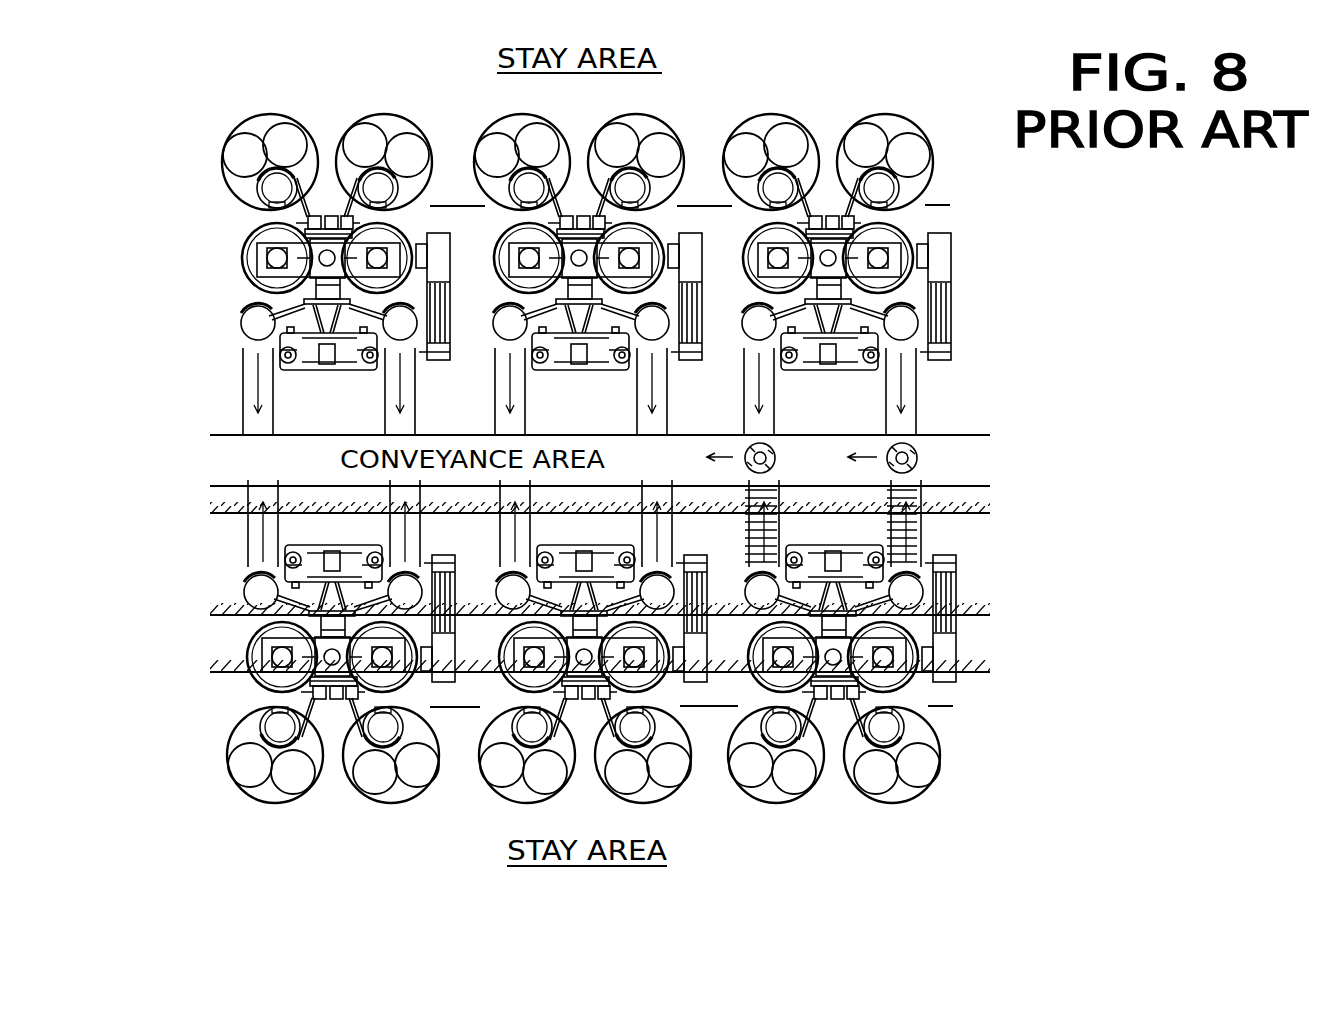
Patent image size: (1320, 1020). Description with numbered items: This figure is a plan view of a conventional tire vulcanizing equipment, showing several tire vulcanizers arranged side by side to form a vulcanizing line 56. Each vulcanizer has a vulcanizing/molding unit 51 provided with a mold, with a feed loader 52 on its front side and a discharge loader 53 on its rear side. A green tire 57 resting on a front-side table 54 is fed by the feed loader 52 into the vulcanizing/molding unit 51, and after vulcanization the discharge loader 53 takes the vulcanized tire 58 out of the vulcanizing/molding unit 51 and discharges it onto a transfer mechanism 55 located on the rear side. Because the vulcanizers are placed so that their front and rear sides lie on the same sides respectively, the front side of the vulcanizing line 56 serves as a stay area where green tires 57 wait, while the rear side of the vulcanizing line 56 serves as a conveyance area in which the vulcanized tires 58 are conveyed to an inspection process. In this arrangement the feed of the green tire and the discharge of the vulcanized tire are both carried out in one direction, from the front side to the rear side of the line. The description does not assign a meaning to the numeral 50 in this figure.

The cassette stage 50 is at (411, 117).
The vulcanizing/molding unit 51 is at (255, 258).
The feed loader 52 is at (270, 189).
The discharge loader 53 is at (255, 328).
The front-side table 54 is at (387, 116).
The transfer mechanism 55 is at (243, 392).
The vulcanizing line 56 is at (994, 296).
The green tire 57 is at (250, 772).
The vulcanized tire 58 is at (776, 458).